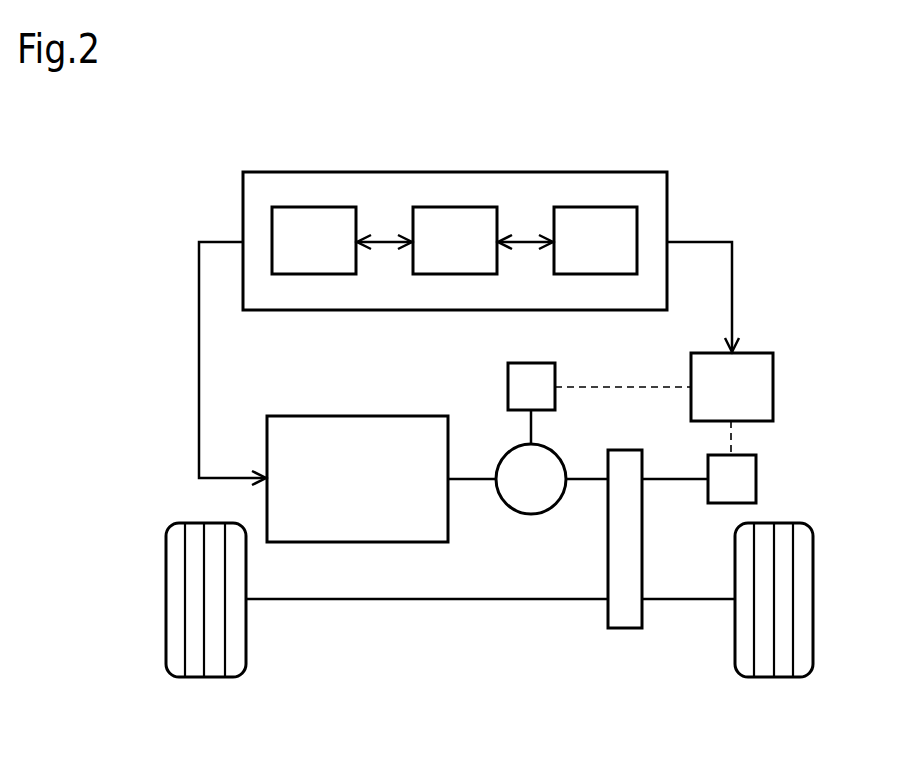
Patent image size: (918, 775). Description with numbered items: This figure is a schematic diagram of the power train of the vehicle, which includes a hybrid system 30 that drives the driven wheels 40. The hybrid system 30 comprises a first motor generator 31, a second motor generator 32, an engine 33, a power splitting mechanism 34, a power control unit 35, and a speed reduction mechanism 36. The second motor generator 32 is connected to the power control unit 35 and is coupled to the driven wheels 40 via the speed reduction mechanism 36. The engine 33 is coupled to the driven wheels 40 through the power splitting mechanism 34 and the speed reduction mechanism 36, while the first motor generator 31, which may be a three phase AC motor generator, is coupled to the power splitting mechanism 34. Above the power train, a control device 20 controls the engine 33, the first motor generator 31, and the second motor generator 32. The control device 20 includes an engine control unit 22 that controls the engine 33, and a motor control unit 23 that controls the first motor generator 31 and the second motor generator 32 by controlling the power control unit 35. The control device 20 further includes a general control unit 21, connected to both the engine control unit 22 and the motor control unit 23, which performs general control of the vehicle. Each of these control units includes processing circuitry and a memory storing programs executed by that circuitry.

The control device 20 is at (381, 172).
The general control unit 21 is at (455, 207).
The engine control unit 22 is at (314, 207).
The motor control unit 23 is at (596, 207).
The hybrid system 30 is at (173, 367).
The first motor generator 31 is at (508, 386).
The second motor generator 32 is at (756, 478).
The engine 33 is at (358, 416).
The power splitting mechanism 34 is at (530, 514).
The power control unit 35 is at (773, 383).
The speed reduction mechanism 36 is at (623, 629).
The driven wheels 40 is at (166, 599).